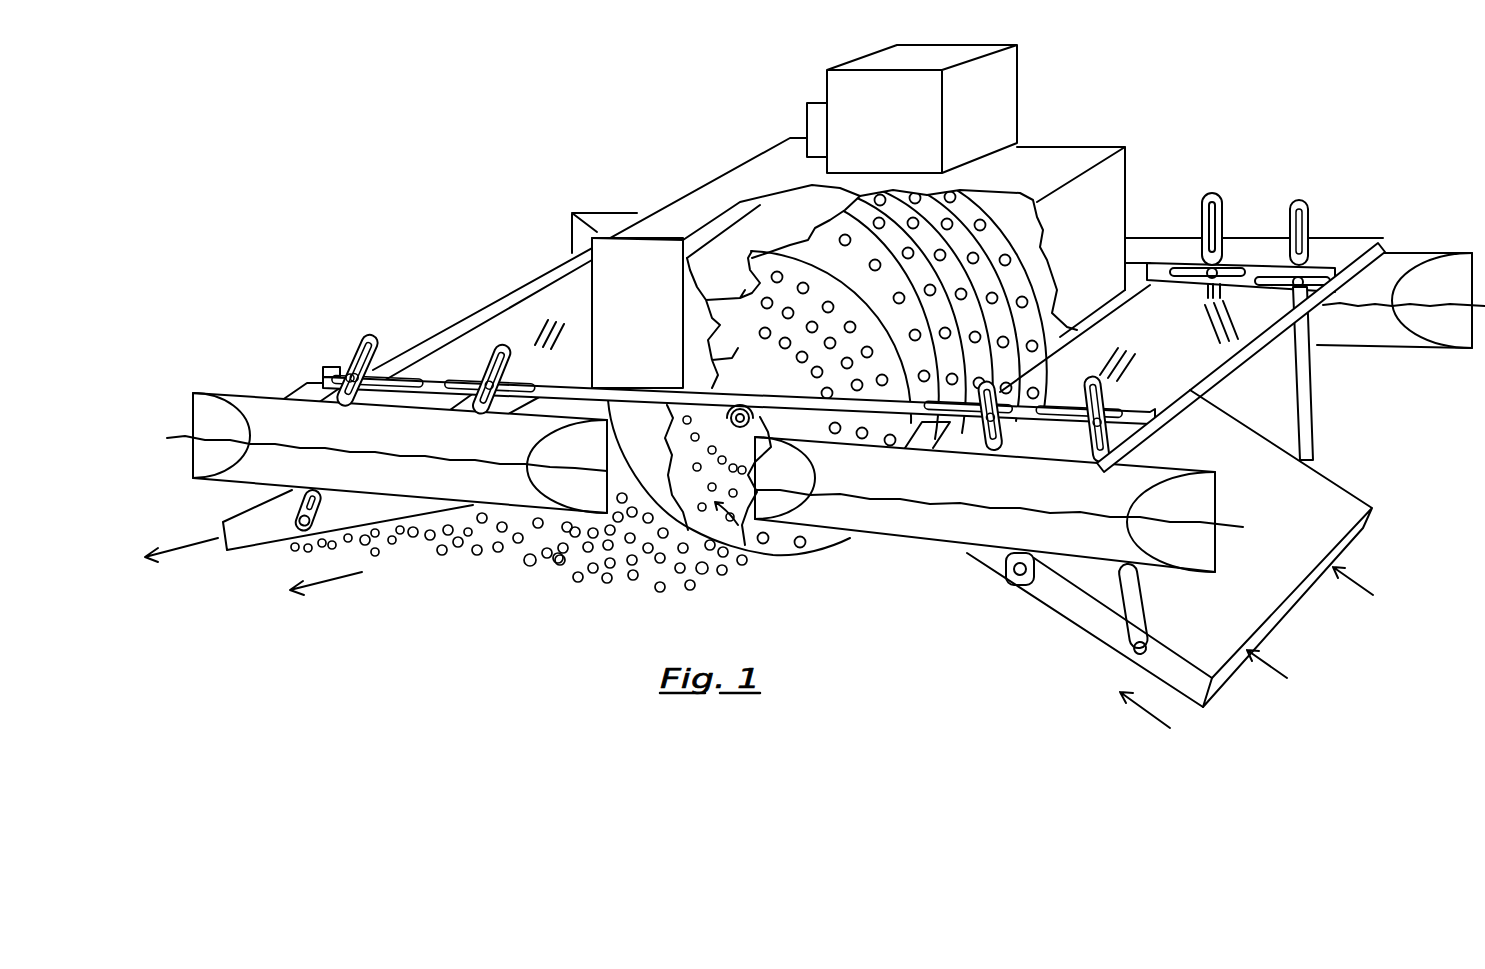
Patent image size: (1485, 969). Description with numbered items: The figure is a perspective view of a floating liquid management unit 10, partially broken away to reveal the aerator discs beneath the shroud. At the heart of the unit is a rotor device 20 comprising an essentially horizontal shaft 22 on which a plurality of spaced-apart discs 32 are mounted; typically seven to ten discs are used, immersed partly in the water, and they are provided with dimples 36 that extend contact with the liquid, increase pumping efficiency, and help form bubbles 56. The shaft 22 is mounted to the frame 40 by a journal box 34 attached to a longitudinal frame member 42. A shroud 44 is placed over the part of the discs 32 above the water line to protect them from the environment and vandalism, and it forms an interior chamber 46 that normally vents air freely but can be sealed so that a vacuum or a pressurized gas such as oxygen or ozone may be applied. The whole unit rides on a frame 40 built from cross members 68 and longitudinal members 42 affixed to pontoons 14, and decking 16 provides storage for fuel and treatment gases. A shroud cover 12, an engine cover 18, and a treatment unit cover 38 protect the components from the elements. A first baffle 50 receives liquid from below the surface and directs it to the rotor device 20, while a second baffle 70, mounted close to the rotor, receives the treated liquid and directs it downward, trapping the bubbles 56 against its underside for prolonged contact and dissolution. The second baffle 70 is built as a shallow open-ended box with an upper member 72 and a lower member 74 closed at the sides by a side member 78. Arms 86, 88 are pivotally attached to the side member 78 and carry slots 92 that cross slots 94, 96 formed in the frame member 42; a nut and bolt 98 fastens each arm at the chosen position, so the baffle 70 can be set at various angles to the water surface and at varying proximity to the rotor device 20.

The liquid management unit 10 is at (678, 154).
The shroud cover 12 is at (775, 158).
The floats (pontoons) 14 is at (612, 220).
The decking 16 is at (587, 308).
The engine cover 18 is at (1000, 106).
The rotor device 20 is at (845, 572).
The shaft (axle) 22 is at (700, 433).
The discs 32 is at (748, 365).
The journal box 34 is at (755, 417).
The dimples 36 is at (805, 358).
The treatment unit cover 38 is at (812, 116).
The frame 40 is at (445, 300).
The frame member 42 is at (632, 388).
The shroud (shell) 44 is at (803, 227).
The interior chamber 46 is at (750, 284).
The first baffle 50 is at (1387, 494).
The bubbles 56 is at (373, 550).
The cross member 68 is at (505, 285).
The second baffle 70 is at (254, 570).
The upper member 72 is at (262, 503).
The lower member 74 is at (1267, 625).
The side member 78 is at (1078, 607).
The arm 86 is at (365, 340).
The arm 88 is at (473, 407).
The slot 92 is at (488, 378).
The slot 94 is at (395, 370).
The slot 96 is at (498, 360).
The nut and bolt 98 is at (348, 375).